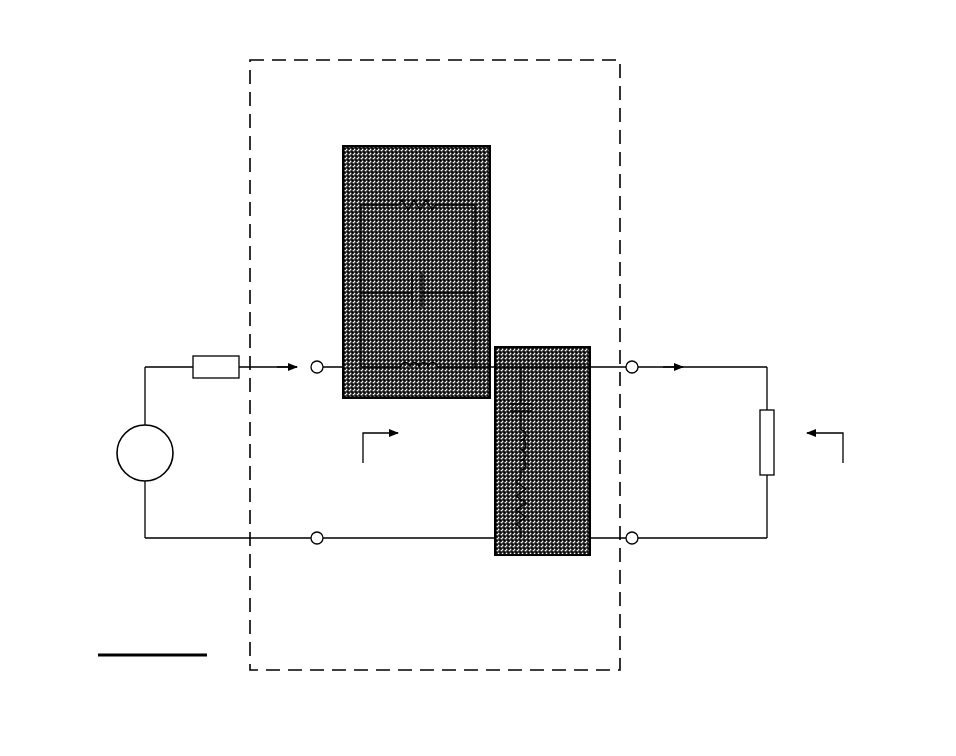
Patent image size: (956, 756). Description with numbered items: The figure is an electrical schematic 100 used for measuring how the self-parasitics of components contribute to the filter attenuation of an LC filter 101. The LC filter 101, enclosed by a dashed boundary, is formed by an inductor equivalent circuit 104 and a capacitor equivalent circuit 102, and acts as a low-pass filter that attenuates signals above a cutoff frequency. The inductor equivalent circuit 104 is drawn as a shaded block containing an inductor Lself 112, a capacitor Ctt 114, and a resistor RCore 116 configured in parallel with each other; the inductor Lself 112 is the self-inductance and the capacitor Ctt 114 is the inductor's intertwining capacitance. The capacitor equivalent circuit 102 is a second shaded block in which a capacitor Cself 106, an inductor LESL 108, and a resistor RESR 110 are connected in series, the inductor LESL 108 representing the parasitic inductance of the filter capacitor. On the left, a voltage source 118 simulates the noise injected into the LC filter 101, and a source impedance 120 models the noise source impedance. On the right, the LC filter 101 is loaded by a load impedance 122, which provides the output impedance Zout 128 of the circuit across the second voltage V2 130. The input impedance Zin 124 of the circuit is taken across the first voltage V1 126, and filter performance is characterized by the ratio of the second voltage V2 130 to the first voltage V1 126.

The electrical schematic 100 is at (198, 50).
The LC filter 101 is at (249, 131).
The capacitor equivalent circuit 102 is at (540, 556).
The inductor equivalent circuit 104 is at (370, 146).
The capacitor Cself 106 is at (510, 407).
The inductor LESL 108 is at (516, 455).
The resistor RESR 110 is at (516, 510).
The inductor Lself 112 is at (402, 362).
The capacitor Ctt 114 is at (408, 277).
The resistor RCore 116 is at (400, 205).
The voltage source 118 is at (133, 428).
The source impedance 120 is at (203, 356).
The load impedance 122 is at (775, 415).
The input impedance Zin 124 is at (348, 484).
The first voltage V1 126 is at (295, 453).
The output impedance Zout 128 is at (848, 506).
The second voltage V2 130 is at (662, 455).